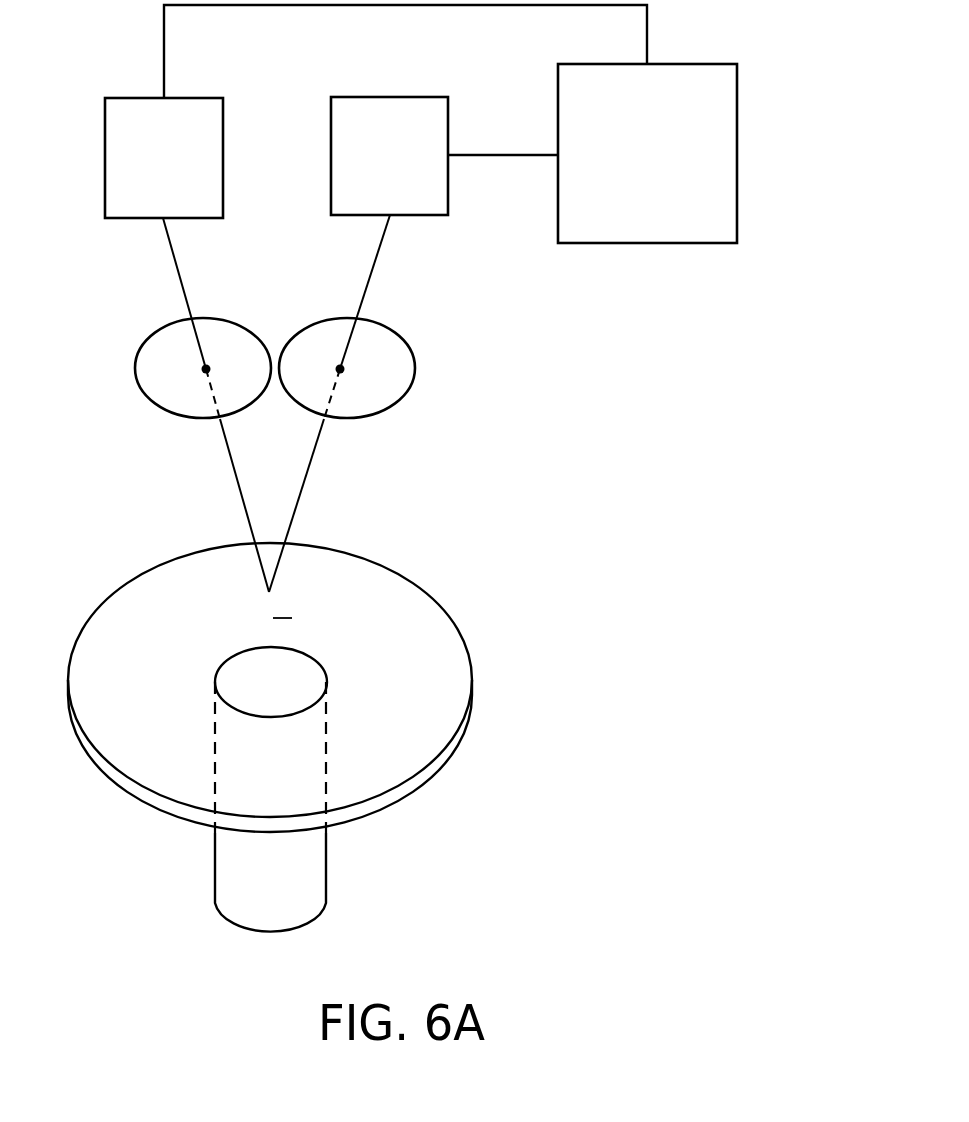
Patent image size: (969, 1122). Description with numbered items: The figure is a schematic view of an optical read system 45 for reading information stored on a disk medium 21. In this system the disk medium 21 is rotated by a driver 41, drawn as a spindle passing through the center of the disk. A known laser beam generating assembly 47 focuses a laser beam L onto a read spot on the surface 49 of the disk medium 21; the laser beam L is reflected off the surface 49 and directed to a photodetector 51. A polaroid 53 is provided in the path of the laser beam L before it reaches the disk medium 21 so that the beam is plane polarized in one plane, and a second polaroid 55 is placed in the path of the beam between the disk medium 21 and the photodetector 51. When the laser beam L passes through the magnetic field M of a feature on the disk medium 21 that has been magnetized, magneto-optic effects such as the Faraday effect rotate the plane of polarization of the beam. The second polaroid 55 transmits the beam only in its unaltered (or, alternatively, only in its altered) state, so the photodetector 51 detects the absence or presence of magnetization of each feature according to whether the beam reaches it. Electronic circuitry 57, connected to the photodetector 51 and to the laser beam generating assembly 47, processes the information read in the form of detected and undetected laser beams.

The disk medium 21 is at (375, 585).
The driver 41 is at (303, 890).
The optical read system 45 is at (590, 376).
The laser beam generating assembly 47 is at (105, 157).
The surface 49 is at (425, 690).
The photodetector 51 is at (363, 97).
The polaroid 53 is at (138, 358).
The second polaroid 55 is at (413, 353).
The electronic circuitry 57 is at (737, 118).
The laser beam L is at (182, 273).
The magnetic field M is at (283, 607).